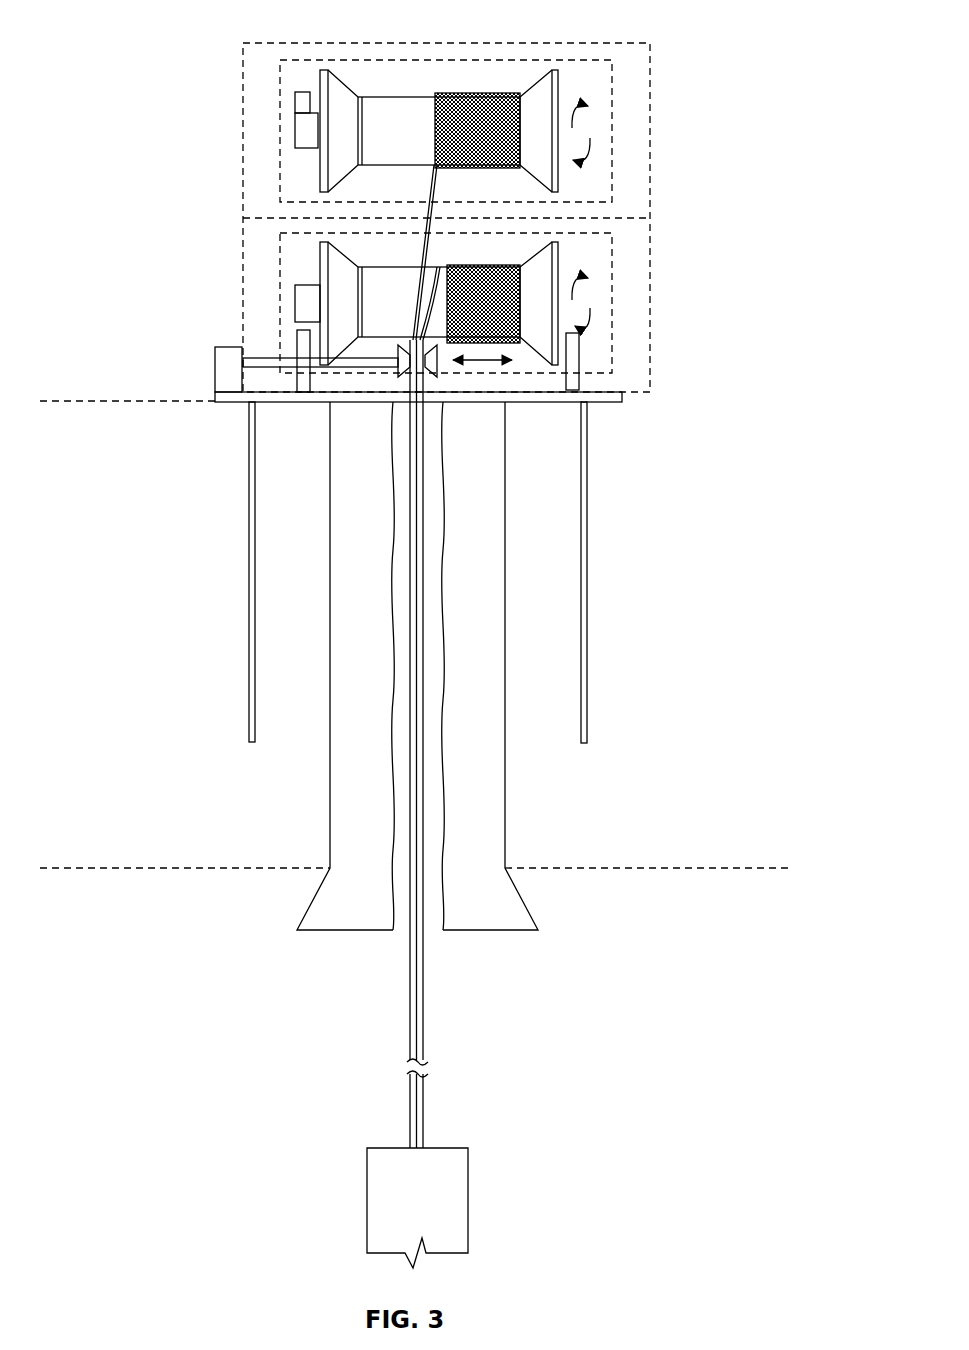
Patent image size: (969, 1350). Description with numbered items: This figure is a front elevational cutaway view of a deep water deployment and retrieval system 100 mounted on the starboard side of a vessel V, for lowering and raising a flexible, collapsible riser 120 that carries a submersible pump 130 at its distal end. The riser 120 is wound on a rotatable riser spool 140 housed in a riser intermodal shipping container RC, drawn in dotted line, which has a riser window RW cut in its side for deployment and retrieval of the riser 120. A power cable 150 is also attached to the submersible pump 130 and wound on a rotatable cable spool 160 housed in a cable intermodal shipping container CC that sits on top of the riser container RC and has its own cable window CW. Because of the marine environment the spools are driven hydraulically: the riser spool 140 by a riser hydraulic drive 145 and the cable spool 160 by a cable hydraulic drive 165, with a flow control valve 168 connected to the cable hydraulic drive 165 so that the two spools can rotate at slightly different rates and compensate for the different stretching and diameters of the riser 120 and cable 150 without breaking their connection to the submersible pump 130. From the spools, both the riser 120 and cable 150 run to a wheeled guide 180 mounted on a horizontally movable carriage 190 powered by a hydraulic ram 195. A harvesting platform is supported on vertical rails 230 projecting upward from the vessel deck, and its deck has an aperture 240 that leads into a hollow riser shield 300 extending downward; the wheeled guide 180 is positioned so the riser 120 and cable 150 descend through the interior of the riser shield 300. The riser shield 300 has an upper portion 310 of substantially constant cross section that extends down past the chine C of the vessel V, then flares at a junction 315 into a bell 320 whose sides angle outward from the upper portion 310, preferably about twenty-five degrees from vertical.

The deep water deployment and retrieval system 100 is at (160, 82).
The cable spool 160 is at (545, 82).
The flow control valve 168 is at (295, 100).
The cable hydraulic drive 165 is at (303, 137).
The riser spool 140 is at (333, 282).
The riser hydraulic drive 145 is at (295, 295).
The hydraulic ram 195 is at (222, 372).
The horizontally movable carriage 190 is at (263, 367).
The wheeled guide 180 is at (398, 372).
The vertical rails 230 is at (579, 363).
The aperture 240 is at (248, 640).
The riser shield 300 is at (532, 613).
The upper portion 310 is at (330, 747).
The junction 315 is at (330, 868).
The bell 320 is at (298, 920).
The power cable 150 is at (410, 992).
The riser 120 is at (425, 1030).
The submersible pump 130 is at (457, 1203).
The cable window CW is at (612, 95).
The cable intermodal shipping container CC is at (650, 152).
The riser window RW is at (612, 283).
The riser intermodal shipping container RC is at (650, 335).
The vessel V is at (160, 580).
The chine C is at (507, 868).